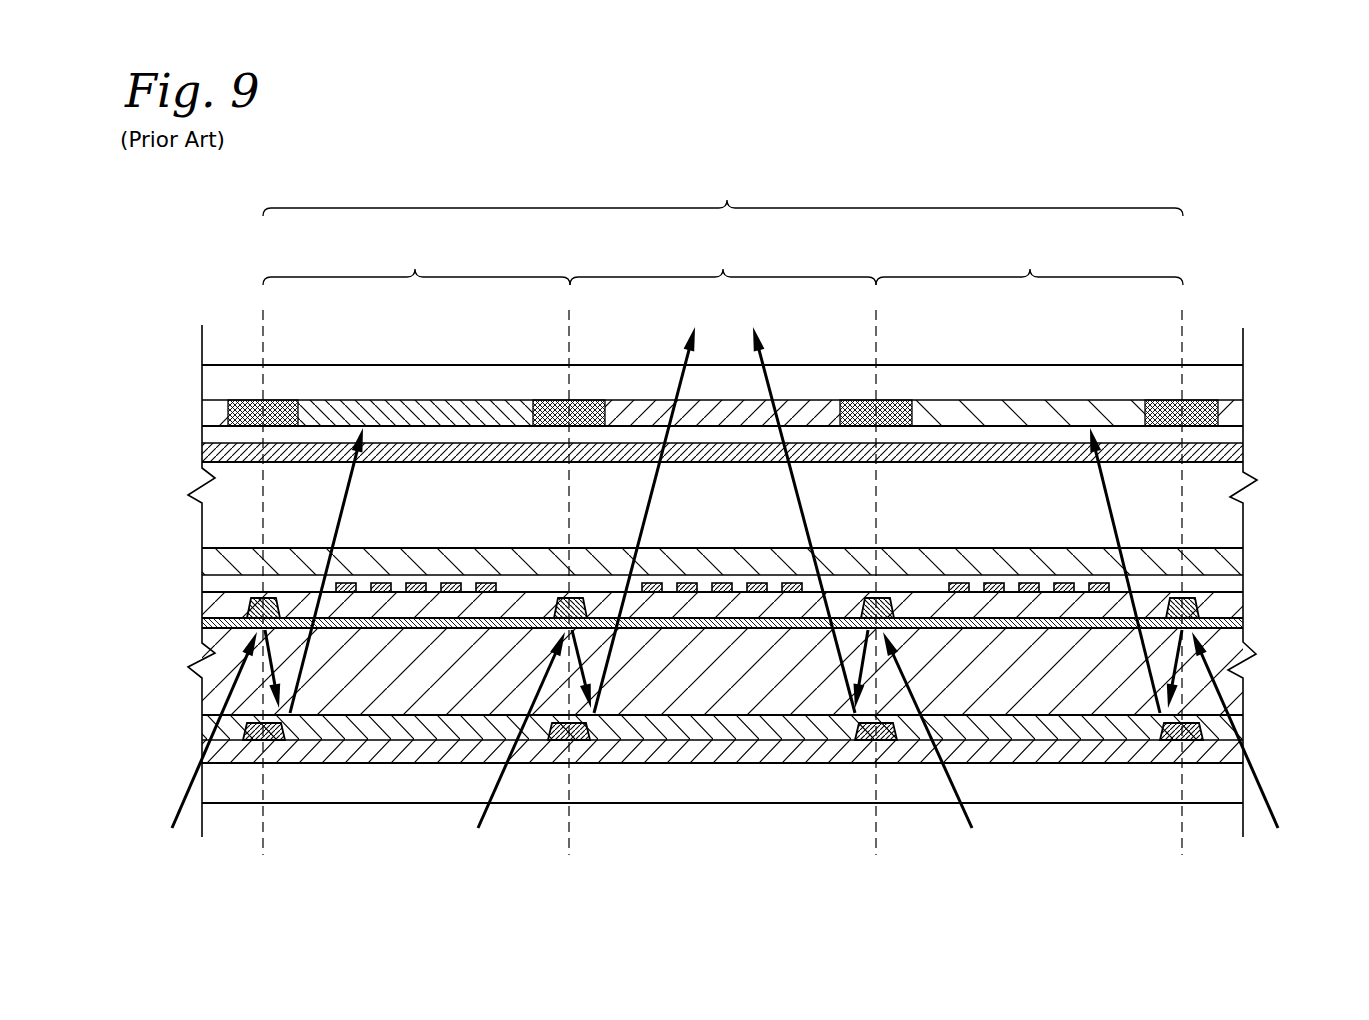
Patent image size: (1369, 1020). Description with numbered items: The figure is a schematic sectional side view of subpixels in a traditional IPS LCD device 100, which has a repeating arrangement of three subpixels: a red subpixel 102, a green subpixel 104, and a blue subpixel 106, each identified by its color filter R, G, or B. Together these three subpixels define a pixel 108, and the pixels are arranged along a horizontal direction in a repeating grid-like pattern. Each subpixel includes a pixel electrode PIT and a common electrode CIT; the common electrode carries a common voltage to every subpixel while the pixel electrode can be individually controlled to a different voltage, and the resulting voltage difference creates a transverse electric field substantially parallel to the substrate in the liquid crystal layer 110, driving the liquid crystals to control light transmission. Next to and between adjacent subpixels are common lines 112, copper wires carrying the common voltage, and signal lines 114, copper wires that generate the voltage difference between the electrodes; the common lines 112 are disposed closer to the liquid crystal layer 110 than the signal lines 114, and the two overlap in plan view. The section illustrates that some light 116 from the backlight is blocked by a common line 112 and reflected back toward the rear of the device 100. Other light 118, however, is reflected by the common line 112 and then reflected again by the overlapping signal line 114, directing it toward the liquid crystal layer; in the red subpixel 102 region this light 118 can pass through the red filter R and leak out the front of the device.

The IPS LCD device 100 is at (222, 268).
The red subpixel 102 is at (415, 269).
The green subpixel 104 is at (723, 269).
The blue subpixel 106 is at (1030, 269).
The pixel 108 is at (727, 200).
The liquid crystal layer 110 is at (176, 462).
The common line 112 is at (248, 603).
The signal line 114 is at (282, 724).
The light transmission 116 is at (180, 806).
The light transmission 118 is at (485, 822).
The red color filter R is at (428, 402).
The green color filter G is at (792, 403).
The blue color filter B is at (1040, 406).
The common electrode CIT is at (503, 607).
The pixel electrode PIT is at (380, 594).